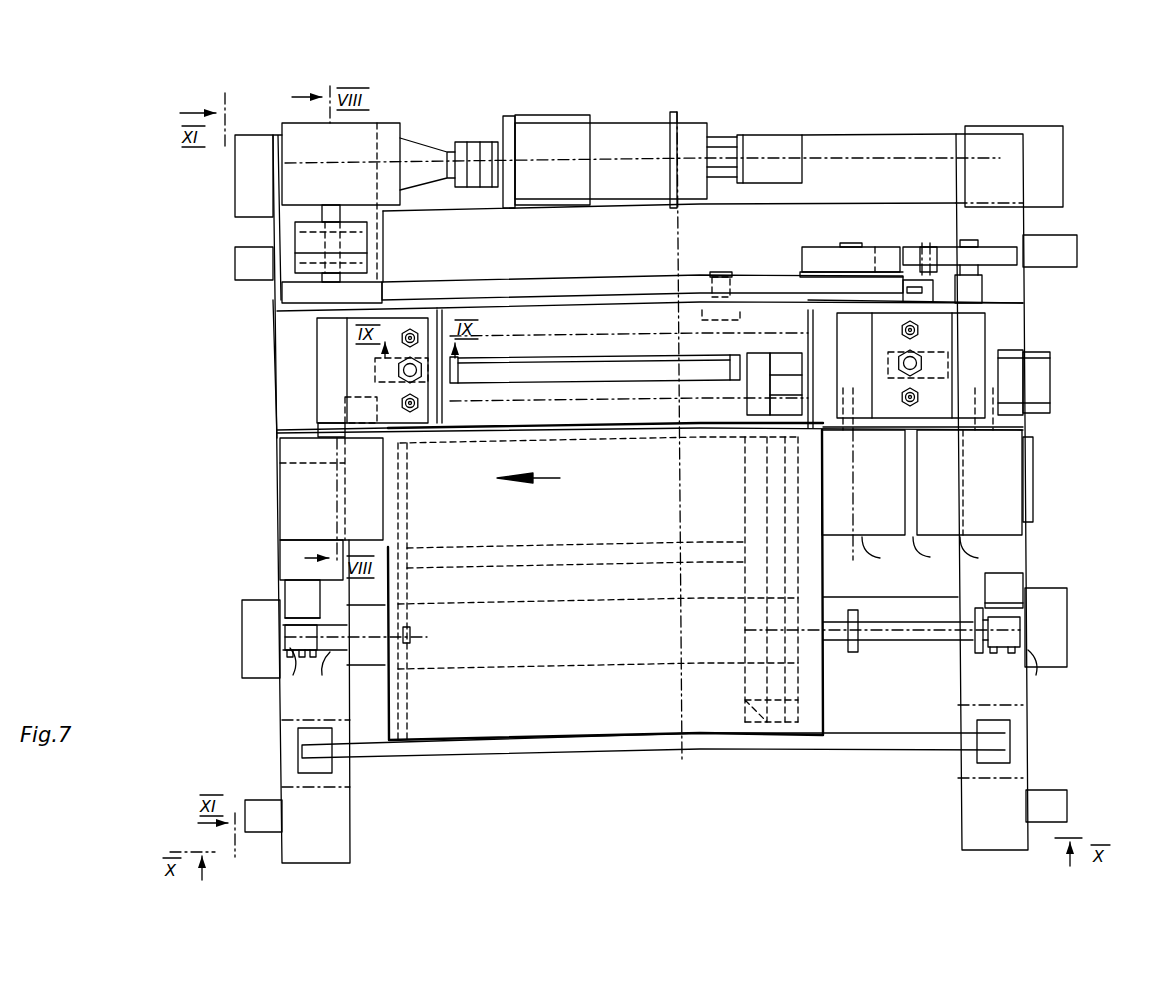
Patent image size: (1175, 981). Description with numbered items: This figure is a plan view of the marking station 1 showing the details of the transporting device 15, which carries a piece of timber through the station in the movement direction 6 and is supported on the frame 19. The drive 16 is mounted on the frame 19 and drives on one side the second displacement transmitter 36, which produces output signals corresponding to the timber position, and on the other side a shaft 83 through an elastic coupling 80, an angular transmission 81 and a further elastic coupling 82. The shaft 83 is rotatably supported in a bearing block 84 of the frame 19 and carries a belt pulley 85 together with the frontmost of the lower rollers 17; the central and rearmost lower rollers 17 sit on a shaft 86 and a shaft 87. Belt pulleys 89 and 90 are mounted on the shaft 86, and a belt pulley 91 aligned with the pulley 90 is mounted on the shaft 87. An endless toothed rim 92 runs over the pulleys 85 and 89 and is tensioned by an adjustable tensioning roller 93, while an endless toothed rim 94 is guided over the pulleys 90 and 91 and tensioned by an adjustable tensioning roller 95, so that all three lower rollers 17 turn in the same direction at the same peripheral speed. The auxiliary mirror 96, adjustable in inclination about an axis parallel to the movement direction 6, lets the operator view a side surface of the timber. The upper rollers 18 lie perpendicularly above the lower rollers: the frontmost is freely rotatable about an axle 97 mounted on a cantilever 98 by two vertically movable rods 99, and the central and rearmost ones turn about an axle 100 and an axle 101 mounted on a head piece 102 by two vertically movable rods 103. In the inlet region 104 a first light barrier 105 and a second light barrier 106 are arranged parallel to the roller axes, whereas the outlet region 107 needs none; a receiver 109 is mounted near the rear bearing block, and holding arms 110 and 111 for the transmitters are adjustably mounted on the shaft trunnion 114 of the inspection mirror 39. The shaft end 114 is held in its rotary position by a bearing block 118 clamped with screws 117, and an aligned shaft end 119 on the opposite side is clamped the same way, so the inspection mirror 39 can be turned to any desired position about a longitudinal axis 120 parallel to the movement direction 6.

The marking station 1 is at (556, 814).
The movement direction 6 is at (522, 483).
The transporting device 15 is at (724, 128).
The drive 16 is at (625, 123).
The lower rollers 17 is at (285, 560).
The upper rollers 18 is at (287, 548).
The frame 19 is at (1032, 224).
The second displacement transmitter 36 is at (786, 135).
The inspection mirror 39 is at (570, 538).
The elastic coupling 80 is at (460, 143).
The angular transmission 81 is at (402, 125).
The further elastic coupling 82 is at (295, 237).
The shaft 83 is at (338, 272).
The bearing block 84 is at (287, 361).
The belt pulley 85 is at (278, 312).
The shaft 86 is at (845, 245).
The shaft 87 is at (972, 243).
The belt pulley 89 is at (1012, 302).
The belt pulley 90 is at (805, 248).
The belt pulley 91 is at (927, 248).
The endless toothed rim 92 is at (506, 281).
The adjustable tensioning roller 93 is at (700, 273).
The endless toothed rim 94 is at (802, 266).
The adjustable tensioning roller 95 is at (878, 262).
The auxiliary mirror 96 is at (520, 378).
The axle 97 is at (318, 428).
The cantilever 98 is at (317, 385).
The rods 99 is at (414, 330).
The axle 100 is at (870, 433).
The axle 101 is at (943, 433).
The head piece 102 is at (987, 338).
The rods 103 is at (918, 331).
The inlet region 104 is at (1118, 345).
The first light barrier 105 is at (1056, 399).
The second light barrier 106 is at (766, 395).
The outlet region 107 is at (200, 490).
The receiver 109 is at (780, 372).
The holding arm 110 is at (1035, 698).
The holding arm 111 is at (853, 645).
The shaft trunnion 114 is at (888, 640).
The screws 117 is at (300, 665).
The gear housing 118 is at (287, 650).
The shaft end 119 is at (330, 690).
The longitudinal axis 120 is at (419, 636).